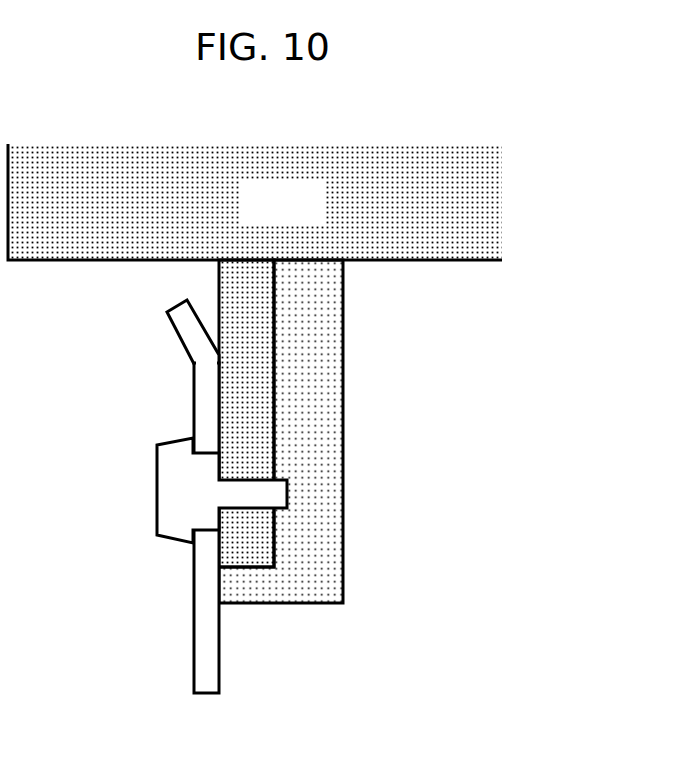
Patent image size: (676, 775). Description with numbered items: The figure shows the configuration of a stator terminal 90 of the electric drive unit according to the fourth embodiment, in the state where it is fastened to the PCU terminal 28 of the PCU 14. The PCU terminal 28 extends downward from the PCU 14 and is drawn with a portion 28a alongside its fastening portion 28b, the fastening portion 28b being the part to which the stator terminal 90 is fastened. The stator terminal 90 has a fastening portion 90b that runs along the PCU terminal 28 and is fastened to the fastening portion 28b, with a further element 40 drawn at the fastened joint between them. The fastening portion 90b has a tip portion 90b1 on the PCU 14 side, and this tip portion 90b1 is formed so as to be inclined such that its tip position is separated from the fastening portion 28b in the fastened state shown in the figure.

The PCU 14 is at (440, 260).
The PCU terminal 28 is at (252, 431).
The first portion of mounting member 28a is at (242, 285).
The fastening portion of PCU terminal 28b is at (245, 462).
The clip 40 is at (168, 481).
The stator terminal 90 is at (128, 496).
The fastening portion of stator terminal 90b is at (205, 555).
The tip portion 90b1 is at (187, 323).